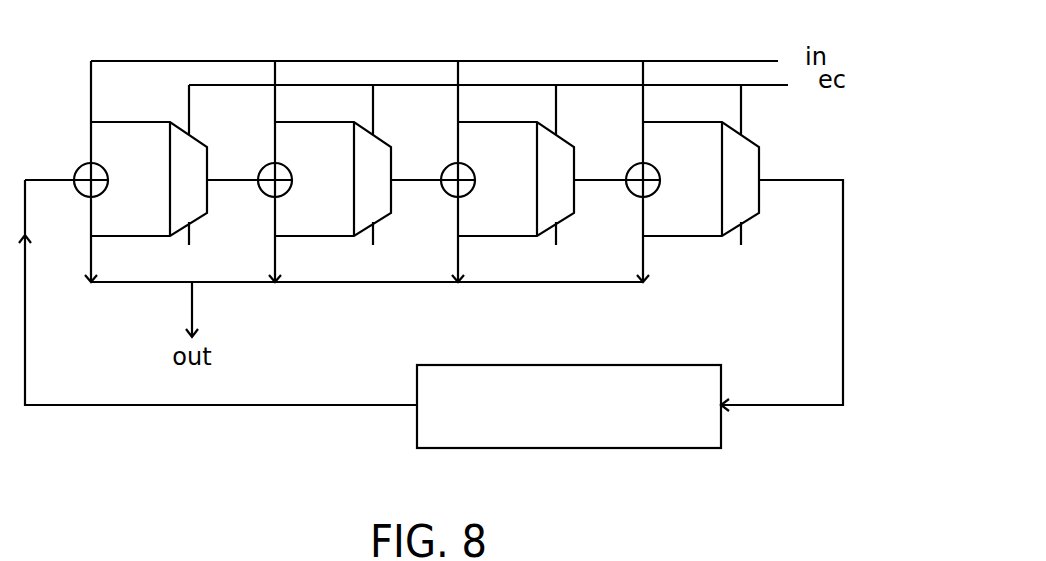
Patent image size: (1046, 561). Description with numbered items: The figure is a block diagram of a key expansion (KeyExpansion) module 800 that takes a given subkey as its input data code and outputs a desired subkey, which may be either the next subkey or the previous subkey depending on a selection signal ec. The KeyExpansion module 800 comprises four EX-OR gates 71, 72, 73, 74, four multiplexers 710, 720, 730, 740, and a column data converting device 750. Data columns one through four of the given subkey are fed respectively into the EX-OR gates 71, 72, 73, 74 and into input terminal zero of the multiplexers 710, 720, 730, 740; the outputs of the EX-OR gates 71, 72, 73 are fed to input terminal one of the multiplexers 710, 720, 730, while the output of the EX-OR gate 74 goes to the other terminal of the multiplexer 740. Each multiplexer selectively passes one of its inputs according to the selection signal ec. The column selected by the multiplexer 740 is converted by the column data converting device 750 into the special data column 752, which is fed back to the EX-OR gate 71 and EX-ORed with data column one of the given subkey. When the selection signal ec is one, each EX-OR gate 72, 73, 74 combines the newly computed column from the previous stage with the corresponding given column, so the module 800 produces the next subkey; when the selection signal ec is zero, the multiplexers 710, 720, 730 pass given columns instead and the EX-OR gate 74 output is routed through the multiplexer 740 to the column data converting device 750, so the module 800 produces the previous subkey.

The EX-OR gate 71 is at (70, 155).
The EX-OR gate 72 is at (255, 155).
The EX-OR gate 73 is at (438, 155).
The EX-OR gate 74 is at (620, 155).
The multiplexer 710 is at (210, 233).
The multiplexer 720 is at (395, 231).
The multiplexer 730 is at (578, 231).
The multiplexer 740 is at (762, 231).
The column data converting device 750 is at (550, 365).
The special data column 752 is at (267, 406).
The KeyExpansion module 800 is at (782, 495).